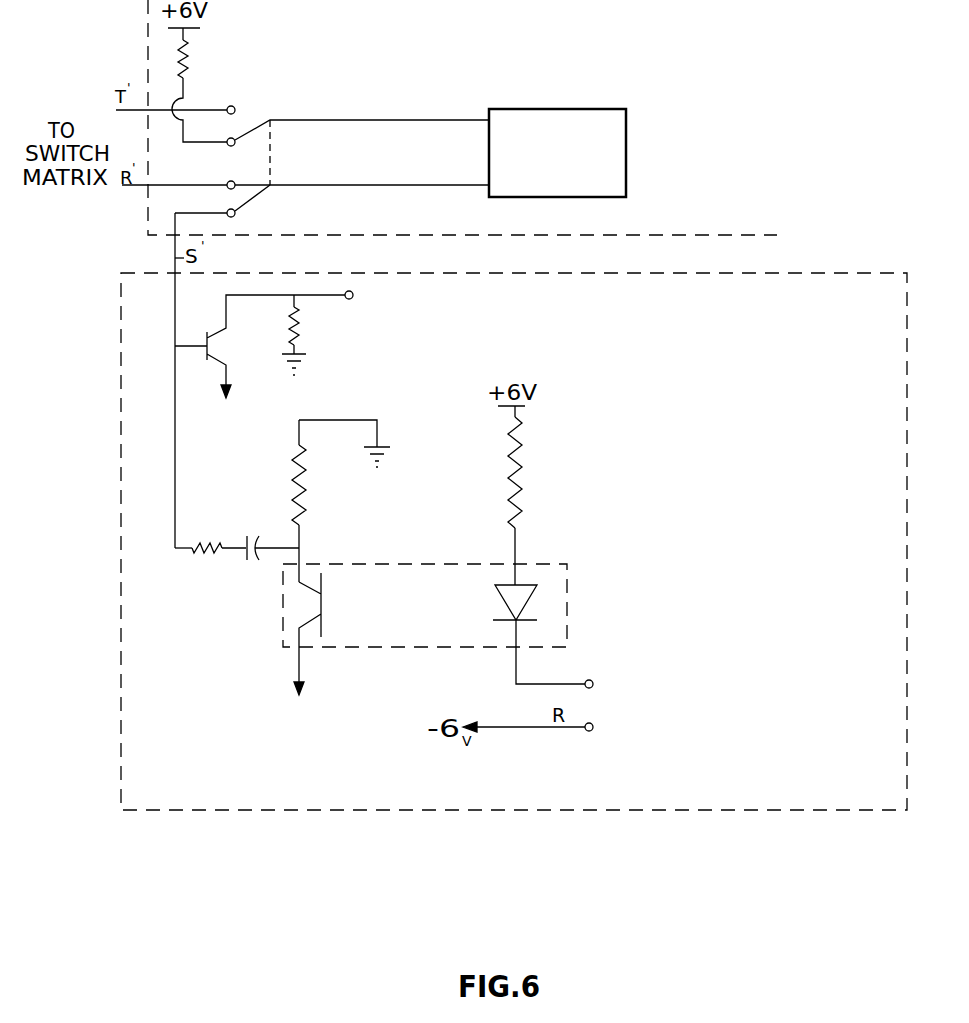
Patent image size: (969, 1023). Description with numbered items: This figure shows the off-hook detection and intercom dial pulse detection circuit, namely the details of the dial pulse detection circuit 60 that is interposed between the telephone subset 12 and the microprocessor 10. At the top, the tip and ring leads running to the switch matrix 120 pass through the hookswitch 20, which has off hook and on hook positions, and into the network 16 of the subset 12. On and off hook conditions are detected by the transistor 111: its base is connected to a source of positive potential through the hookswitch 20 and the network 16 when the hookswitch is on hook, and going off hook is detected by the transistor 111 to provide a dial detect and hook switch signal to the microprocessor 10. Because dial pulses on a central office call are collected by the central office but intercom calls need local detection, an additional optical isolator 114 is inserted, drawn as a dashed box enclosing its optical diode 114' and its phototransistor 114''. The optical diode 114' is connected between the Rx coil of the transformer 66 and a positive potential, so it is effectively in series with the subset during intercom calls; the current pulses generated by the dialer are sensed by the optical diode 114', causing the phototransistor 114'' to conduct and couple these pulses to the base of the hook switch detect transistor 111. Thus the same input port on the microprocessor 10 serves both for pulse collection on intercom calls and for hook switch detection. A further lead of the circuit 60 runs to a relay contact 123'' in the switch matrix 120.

The hookswitch 20 is at (302, 155).
The network and dialing element 16 is at (565, 190).
The subset 12 is at (573, 220).
The switch matrix 120 is at (56, 199).
The transistor 111 is at (217, 337).
The microprocessor 10 is at (600, 323).
The optical isolator 114 is at (432, 626).
The phototransistor 114'' is at (357, 645).
The optical diode 114' is at (520, 606).
The transformer 66 is at (711, 686).
The relay contact 123'' is at (737, 742).
The dial pulse detection circuit 60 is at (500, 812).